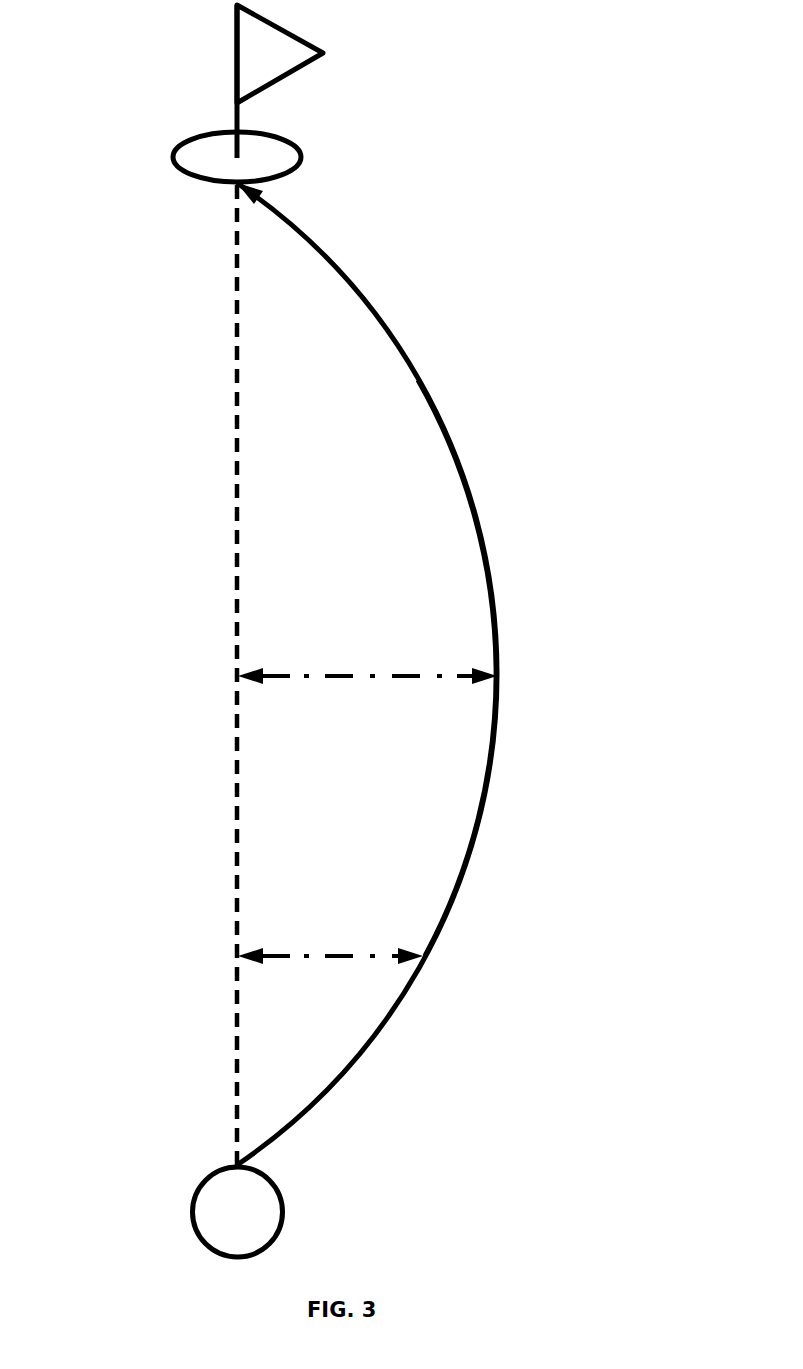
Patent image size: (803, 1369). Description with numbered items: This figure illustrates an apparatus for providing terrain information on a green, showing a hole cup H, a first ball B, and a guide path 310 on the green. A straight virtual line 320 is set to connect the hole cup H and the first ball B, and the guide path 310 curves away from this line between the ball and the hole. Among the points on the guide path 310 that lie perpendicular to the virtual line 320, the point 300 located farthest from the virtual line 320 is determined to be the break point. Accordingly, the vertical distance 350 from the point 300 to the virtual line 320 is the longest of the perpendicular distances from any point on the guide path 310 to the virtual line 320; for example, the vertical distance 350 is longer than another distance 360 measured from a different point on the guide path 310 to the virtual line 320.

The hole cup H is at (186, 181).
The first ball B is at (190, 1218).
The guide path 310 is at (379, 309).
The virtual line 320 is at (236, 531).
The point 300 is at (499, 669).
The vertical distance 350 is at (331, 674).
The distance 360 is at (337, 951).